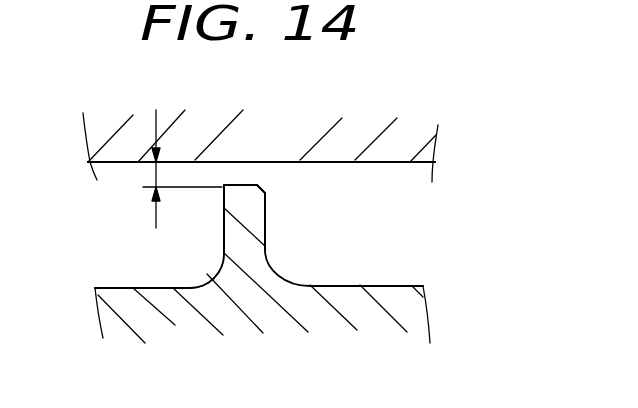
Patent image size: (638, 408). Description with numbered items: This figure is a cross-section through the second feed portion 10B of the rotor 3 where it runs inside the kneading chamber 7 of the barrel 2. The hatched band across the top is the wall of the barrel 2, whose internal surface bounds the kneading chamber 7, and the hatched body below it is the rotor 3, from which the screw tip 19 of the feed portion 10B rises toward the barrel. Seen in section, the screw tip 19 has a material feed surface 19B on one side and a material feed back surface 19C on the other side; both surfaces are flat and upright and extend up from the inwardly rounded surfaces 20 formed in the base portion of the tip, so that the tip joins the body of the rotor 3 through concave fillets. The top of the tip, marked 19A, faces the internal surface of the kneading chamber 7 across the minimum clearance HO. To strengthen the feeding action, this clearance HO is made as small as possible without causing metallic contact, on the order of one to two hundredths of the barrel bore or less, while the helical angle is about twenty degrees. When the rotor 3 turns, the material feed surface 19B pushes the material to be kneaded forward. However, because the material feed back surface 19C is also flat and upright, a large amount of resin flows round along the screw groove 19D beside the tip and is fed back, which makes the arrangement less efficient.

The barrel 2 is at (392, 142).
The rotor 3 is at (393, 308).
The kneading chamber 7 is at (400, 181).
The second feed portion 10B is at (352, 273).
The screw tip 19 is at (243, 212).
The top surface of protrusion 19A is at (245, 183).
The material feed surface 19B is at (223, 212).
The material feed back surface 19C is at (263, 197).
The screw groove 19D is at (138, 287).
The inwardly rounded surface 20 is at (212, 272).
The minimum clearance HO is at (155, 168).